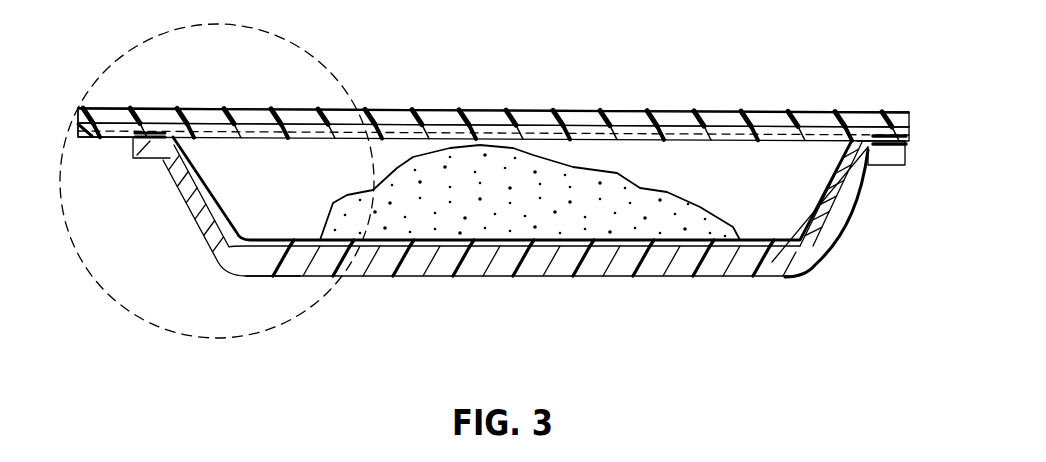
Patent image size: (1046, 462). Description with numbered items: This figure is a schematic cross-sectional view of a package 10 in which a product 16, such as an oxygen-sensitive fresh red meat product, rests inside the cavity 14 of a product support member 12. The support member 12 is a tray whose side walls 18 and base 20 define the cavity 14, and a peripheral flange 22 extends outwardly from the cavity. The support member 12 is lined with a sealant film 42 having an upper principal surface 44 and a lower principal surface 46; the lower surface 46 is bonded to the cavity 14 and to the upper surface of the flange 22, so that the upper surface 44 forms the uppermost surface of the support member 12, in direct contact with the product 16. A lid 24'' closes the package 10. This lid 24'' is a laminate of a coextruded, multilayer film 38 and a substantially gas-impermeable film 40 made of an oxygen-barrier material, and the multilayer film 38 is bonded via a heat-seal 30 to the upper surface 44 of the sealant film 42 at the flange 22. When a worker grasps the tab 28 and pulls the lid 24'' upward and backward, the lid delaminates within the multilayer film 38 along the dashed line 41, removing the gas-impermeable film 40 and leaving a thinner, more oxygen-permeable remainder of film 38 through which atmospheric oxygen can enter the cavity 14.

The package 10 is at (705, 95).
The product support member 12 is at (836, 273).
The cavity 14 is at (782, 190).
The product 16 is at (560, 228).
The side walls 18 is at (840, 227).
The base 20 is at (416, 278).
The peripheral flange 22 is at (165, 162).
The lid 24'' is at (493, 73).
The tab 28 is at (112, 108).
The heat-seal 30 is at (131, 146).
The coextruded, multilayer film 38 is at (558, 122).
The substantially gas-impermeable film 40 is at (492, 109).
The dashed line 41 is at (280, 100).
The sealant film 42 is at (248, 210).
The upper principal surface 44 is at (276, 240).
The lower principal surface 46 is at (263, 250).